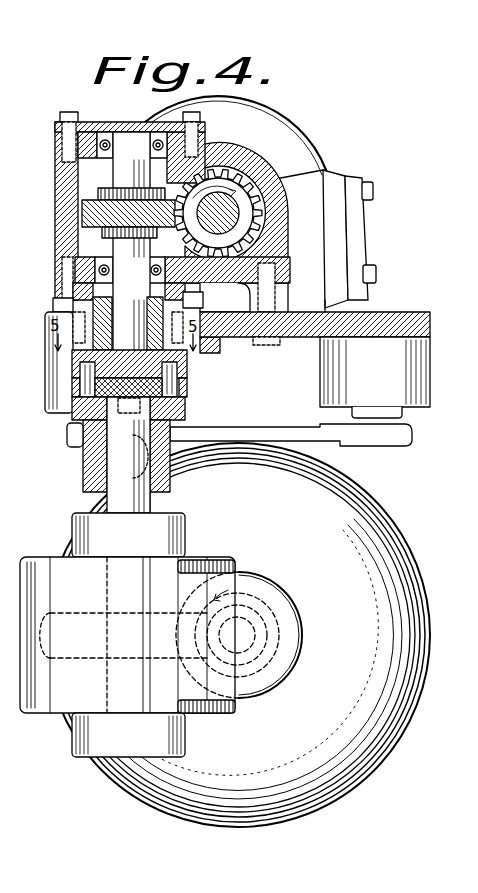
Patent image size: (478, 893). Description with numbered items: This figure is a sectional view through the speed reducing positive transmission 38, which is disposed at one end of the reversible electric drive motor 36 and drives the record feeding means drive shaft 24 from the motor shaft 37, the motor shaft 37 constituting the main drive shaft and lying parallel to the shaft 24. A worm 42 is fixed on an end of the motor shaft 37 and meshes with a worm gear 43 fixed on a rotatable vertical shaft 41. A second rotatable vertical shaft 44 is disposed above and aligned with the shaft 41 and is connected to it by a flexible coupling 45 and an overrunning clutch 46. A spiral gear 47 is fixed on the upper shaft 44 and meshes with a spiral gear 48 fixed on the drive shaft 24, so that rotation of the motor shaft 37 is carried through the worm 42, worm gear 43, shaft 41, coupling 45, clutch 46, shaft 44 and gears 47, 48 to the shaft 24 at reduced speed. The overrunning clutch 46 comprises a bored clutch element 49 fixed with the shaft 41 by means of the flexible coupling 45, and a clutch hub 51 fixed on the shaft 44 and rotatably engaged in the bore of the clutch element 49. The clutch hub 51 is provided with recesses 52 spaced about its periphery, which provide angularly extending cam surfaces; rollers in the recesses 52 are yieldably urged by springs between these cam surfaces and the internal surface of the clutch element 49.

The record feeding means drive shaft 24 is at (228, 200).
The reversible electric drive motor 36 is at (363, 520).
The motor shaft 37 is at (255, 633).
The speed reducing positive transmission 38 is at (83, 448).
The rotatable vertical shaft 41 is at (147, 509).
The worm 42 is at (272, 653).
The worm gear 43 is at (97, 660).
The rotatable vertical shaft 44 is at (117, 248).
The flexible coupling 45 is at (190, 388).
The overrunning clutch 46 is at (72, 352).
The spiral gear 47 is at (88, 197).
The spiral gear 48 is at (258, 212).
The bored clutch element 49 is at (72, 317).
The clutch hub 51 is at (108, 332).
The recesses 52 is at (170, 346).